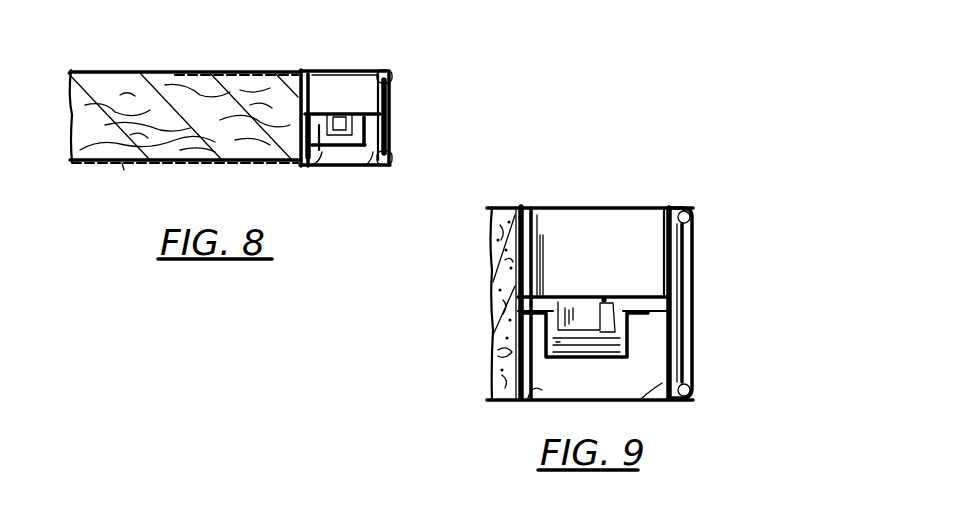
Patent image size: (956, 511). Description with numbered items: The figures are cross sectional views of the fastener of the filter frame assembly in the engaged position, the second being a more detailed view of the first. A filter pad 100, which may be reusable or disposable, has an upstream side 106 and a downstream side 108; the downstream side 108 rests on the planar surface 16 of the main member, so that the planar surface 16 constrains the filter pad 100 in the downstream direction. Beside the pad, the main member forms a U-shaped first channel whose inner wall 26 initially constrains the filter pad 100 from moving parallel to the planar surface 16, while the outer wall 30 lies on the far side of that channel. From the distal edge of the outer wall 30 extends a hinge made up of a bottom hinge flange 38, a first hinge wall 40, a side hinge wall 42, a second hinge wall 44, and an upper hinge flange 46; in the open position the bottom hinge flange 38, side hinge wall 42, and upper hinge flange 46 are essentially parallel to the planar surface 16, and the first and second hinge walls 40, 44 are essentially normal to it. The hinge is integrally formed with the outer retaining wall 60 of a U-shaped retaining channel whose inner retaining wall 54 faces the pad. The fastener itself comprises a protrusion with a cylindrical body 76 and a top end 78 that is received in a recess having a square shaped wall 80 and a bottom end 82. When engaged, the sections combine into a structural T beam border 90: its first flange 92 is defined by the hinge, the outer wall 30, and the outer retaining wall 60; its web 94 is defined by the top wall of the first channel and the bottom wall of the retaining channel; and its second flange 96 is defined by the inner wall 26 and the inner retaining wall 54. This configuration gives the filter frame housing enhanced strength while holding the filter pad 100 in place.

In FIG. 8, the planar surface 16 is at (124, 170).
In FIG. 8, the inner wall 26 is at (323, 160).
In FIG. 9, the inner wall 26 is at (532, 401).
In FIG. 8, the outer wall 30 is at (372, 162).
In FIG. 9, the outer wall 30 is at (646, 402).
In FIG. 9, the bottom hinge flange 38 is at (694, 394).
In FIG. 9, the first hinge wall 40 is at (690, 376).
In FIG. 8, the side hinge wall 42 is at (388, 122).
In FIG. 9, the side hinge wall 42 is at (692, 336).
In FIG. 9, the second hinge wall 44 is at (696, 224).
In FIG. 9, the upper hinge flange 46 is at (688, 211).
In FIG. 8, the inner retaining wall 54 is at (307, 102).
In FIG. 9, the inner retaining wall 54 is at (534, 208).
In FIG. 8, the outer retaining wall 60 is at (368, 72).
In FIG. 9, the outer retaining wall 60 is at (656, 206).
In FIG. 9, the cylindrical body 76 is at (604, 298).
In FIG. 9, the top end 78 is at (585, 330).
In FIG. 9, the square shaped wall 80 is at (603, 353).
In FIG. 9, the bottom end 82 is at (582, 352).
In FIG. 9, the structural T beam border 90 is at (688, 180).
In FIG. 9, the first flange 92 is at (697, 322).
In FIG. 9, the web 94 is at (548, 254).
In FIG. 9, the second flange 96 is at (518, 283).
In FIG. 8, the filter pad 100 is at (84, 111).
In FIG. 9, the filter pad 100 is at (500, 352).
In FIG. 8, the upstream side 106 is at (127, 44).
In FIG. 8, the downstream side 108 is at (93, 164).